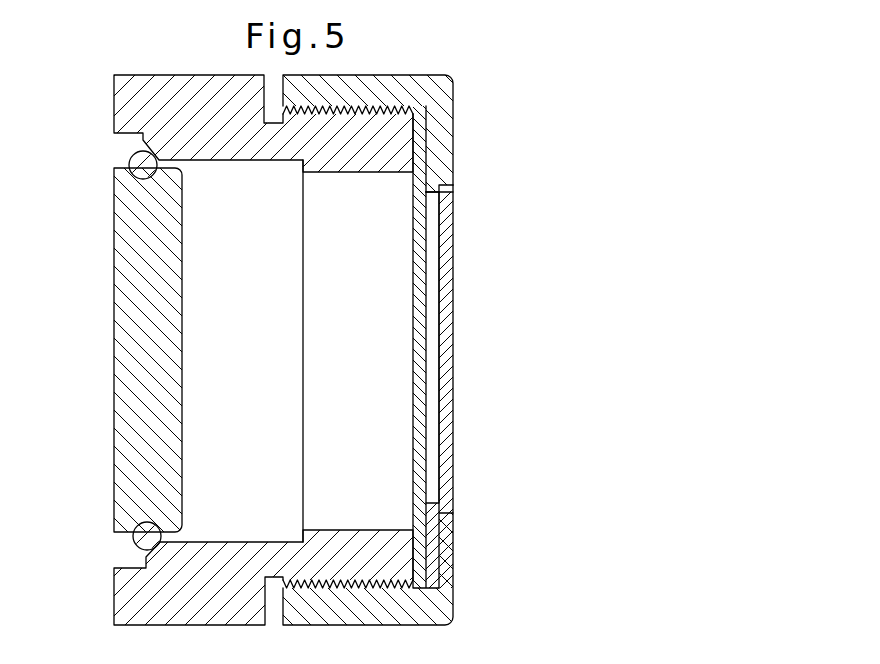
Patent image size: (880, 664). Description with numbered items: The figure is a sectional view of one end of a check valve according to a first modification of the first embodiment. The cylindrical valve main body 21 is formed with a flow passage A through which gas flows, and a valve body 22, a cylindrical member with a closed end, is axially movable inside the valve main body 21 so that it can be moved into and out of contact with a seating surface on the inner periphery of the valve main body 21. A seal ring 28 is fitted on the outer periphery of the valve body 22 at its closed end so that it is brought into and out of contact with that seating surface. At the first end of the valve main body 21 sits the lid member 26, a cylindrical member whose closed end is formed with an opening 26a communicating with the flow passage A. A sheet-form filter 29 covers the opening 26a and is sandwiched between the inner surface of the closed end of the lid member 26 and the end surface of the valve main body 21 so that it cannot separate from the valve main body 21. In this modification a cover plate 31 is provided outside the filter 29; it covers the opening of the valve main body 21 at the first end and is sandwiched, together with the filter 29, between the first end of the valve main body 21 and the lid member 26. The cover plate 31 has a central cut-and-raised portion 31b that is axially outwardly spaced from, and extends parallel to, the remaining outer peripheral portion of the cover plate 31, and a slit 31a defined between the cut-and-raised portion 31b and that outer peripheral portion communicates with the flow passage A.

The valve main body 21 is at (150, 97).
The valve body 22 is at (143, 270).
The lid member 26 is at (427, 94).
The opening 26a is at (443, 185).
The seal ring 28 is at (134, 179).
The filter 29 is at (424, 432).
The cover plate 31 is at (446, 318).
The slit 31a is at (432, 197).
The cut-and-raised portion 31b is at (447, 262).
The flow passage A is at (372, 375).